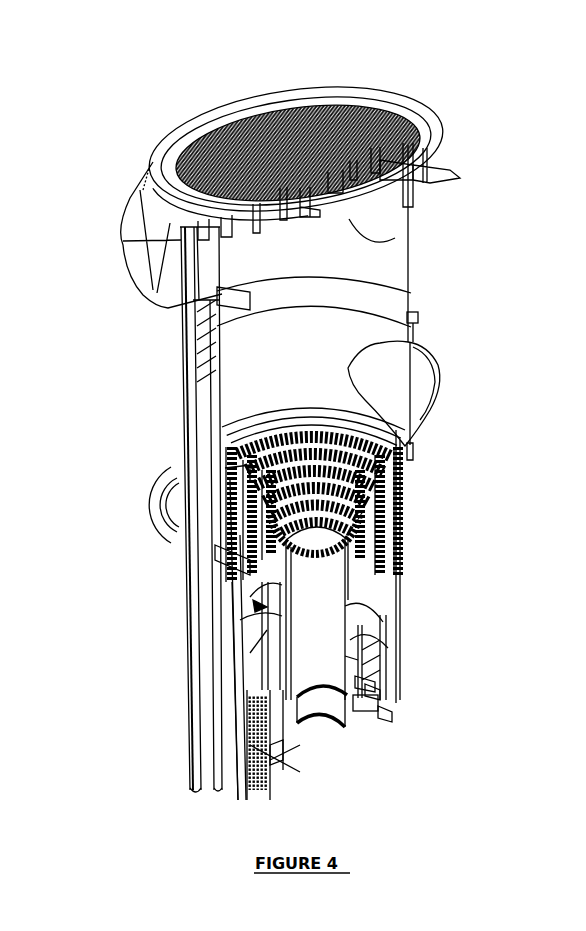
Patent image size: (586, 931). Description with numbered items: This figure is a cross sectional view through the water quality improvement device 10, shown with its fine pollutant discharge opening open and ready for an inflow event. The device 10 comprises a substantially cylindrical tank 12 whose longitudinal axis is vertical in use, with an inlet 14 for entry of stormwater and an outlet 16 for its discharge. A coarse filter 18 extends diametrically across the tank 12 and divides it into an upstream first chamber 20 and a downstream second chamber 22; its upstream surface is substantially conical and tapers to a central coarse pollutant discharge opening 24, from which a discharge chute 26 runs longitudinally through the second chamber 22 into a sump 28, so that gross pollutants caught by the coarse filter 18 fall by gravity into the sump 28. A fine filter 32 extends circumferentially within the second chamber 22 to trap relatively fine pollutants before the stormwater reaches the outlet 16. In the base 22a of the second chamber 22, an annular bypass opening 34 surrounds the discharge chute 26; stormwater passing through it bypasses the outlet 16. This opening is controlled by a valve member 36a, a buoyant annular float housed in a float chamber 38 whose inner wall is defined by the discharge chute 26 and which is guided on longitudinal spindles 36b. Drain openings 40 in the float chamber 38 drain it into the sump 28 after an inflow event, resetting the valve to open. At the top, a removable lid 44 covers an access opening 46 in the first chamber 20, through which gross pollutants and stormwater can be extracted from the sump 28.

The water quality improvement device 10 is at (148, 137).
The removable lid 44 is at (233, 113).
The access opening 46 is at (395, 238).
The first chamber 20 is at (346, 340).
The inlet 14 is at (410, 377).
The tank 12 is at (186, 425).
The outlet 16 is at (157, 492).
The coarse filter 18 is at (235, 506).
The coarse pollutant discharge opening 24 is at (405, 503).
The fine filter 32 is at (397, 527).
The base of the second chamber 22a is at (395, 557).
The second chamber 22 is at (245, 615).
The bypass opening 34 is at (272, 641).
The valve member 36a is at (397, 636).
The discharge chute 26 is at (345, 656).
The spindles 36b is at (362, 678).
The sump 28 is at (372, 684).
The float chamber 38 is at (292, 714).
The drain openings 40 is at (295, 760).